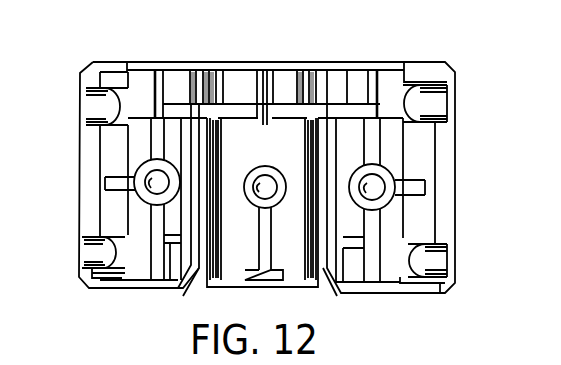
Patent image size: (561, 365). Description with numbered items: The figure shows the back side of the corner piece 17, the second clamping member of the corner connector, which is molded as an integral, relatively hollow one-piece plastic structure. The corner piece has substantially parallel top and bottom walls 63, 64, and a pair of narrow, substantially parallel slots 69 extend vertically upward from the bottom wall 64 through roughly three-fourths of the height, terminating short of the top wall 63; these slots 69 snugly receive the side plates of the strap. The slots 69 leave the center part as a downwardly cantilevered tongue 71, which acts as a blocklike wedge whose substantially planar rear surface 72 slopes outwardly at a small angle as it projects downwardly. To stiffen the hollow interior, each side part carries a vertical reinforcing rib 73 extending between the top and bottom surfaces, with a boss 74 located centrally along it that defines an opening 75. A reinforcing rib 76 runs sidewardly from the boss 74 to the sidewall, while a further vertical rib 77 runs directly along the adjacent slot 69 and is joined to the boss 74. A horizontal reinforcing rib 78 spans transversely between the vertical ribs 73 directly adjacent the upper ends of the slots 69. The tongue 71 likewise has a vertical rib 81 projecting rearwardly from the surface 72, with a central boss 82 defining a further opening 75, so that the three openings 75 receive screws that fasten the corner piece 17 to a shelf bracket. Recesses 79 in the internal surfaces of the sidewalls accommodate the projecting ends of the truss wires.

The corner piece 17 is at (460, 60).
The top wall 63 is at (177, 69).
The bottom wall 64 is at (128, 290).
The slots 69 is at (183, 296).
The tongue 71 is at (284, 282).
The rear surface 72 is at (306, 224).
The reinforcing rib 73 is at (155, 128).
The boss 74 is at (147, 197).
The opening 75 is at (130, 181).
The reinforcing rib 76 is at (417, 195).
The rib 77 is at (196, 128).
The horizontal reinforcing rib 78 is at (297, 118).
The recesses 79 is at (95, 106).
The vertical rib 81 is at (262, 140).
The central boss 82 is at (253, 173).